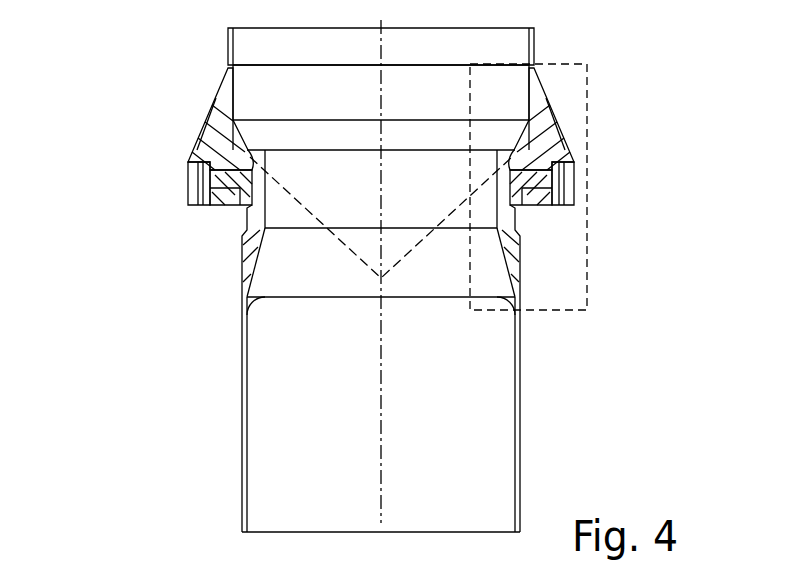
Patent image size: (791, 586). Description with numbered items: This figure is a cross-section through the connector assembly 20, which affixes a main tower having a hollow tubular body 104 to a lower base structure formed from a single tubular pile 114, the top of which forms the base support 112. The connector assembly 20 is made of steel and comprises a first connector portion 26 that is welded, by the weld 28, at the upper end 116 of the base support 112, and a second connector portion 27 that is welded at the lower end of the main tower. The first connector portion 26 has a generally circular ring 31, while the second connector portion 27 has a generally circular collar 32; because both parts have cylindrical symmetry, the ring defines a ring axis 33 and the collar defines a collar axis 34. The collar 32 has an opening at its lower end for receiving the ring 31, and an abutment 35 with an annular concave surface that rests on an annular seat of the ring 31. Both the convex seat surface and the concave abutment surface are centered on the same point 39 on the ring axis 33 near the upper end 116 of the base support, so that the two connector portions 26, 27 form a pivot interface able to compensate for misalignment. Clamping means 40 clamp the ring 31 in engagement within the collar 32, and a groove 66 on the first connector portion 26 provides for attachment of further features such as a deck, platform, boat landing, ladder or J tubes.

The connector assembly 20 is at (187, 95).
The first connector portion 26 is at (223, 241).
The second connector portion 27 is at (185, 120).
The weld 28 is at (247, 317).
The ring 31 is at (243, 215).
The collar 32 is at (548, 112).
The ring axis 33 is at (382, 510).
The collar axis 34 is at (382, 78).
The abutment 35 is at (529, 217).
The center point 39 is at (382, 280).
The clamping means 40 is at (589, 155).
The groove 66 is at (518, 232).
The hollow tubular body 104 is at (535, 37).
The base support 112 is at (242, 503).
The tubular pile 114 is at (533, 428).
The upper end 116 is at (283, 313).